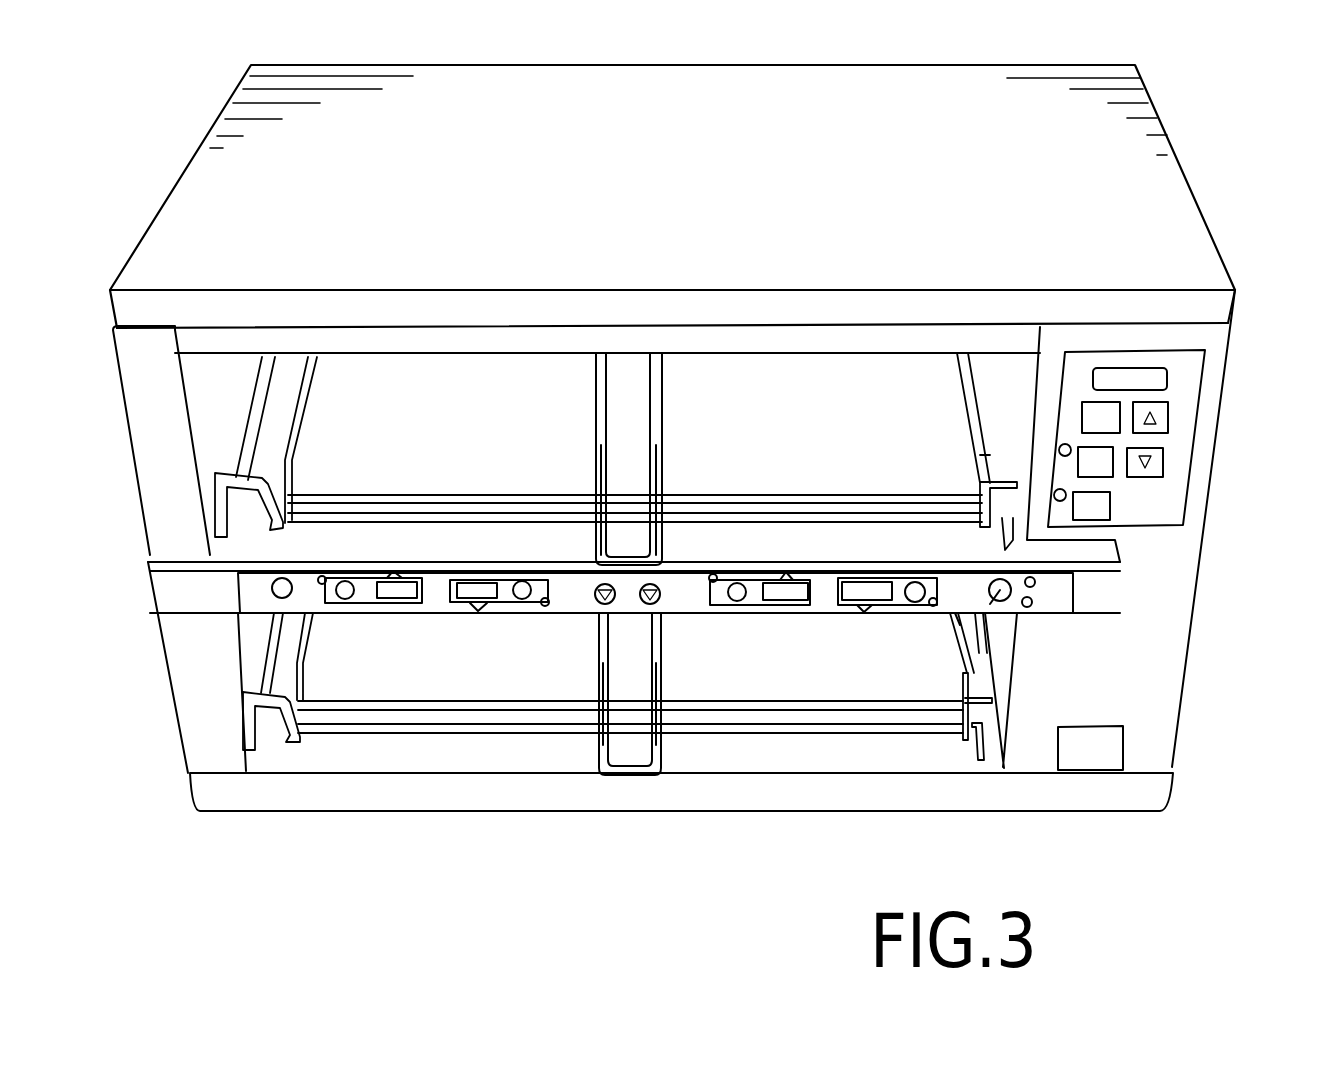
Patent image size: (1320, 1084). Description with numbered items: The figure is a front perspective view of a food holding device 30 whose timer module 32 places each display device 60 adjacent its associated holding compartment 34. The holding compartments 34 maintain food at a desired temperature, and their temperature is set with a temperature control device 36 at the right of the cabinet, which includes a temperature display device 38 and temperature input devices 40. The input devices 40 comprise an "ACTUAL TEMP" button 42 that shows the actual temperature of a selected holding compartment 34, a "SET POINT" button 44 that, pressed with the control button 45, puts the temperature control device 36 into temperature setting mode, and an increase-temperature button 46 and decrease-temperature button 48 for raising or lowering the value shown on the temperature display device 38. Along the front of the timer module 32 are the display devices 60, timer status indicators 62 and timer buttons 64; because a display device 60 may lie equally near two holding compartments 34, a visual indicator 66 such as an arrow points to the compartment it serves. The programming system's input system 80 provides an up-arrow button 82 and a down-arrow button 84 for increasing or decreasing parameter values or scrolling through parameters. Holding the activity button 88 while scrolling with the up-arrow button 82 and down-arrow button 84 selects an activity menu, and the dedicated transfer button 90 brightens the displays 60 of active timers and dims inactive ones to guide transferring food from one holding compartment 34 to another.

The food holding device 30 is at (1063, 115).
The timer module 32 is at (1100, 600).
The holding compartment 34 is at (377, 397).
The temperature control device 36 is at (1165, 340).
The temperature display device 38 is at (1118, 368).
The temperature input devices 40 is at (1230, 358).
The "ACTUAL TEMP" button 42 is at (1093, 416).
The "SET POINT" button 44 is at (1103, 465).
The control button 45 is at (1093, 513).
The increase-temperature button 46 is at (1155, 414).
The decrease-temperature button 48 is at (1155, 474).
The display device 60 is at (458, 583).
The timer status indicator 62 is at (545, 606).
The timer button 64 is at (522, 582).
The visual indicator 66 is at (478, 611).
The input system 80 is at (1065, 596).
The up-arrow button 82 is at (605, 604).
The down-arrow button 84 is at (652, 605).
The activity button 88 is at (960, 612).
The transfer button 90 is at (282, 588).